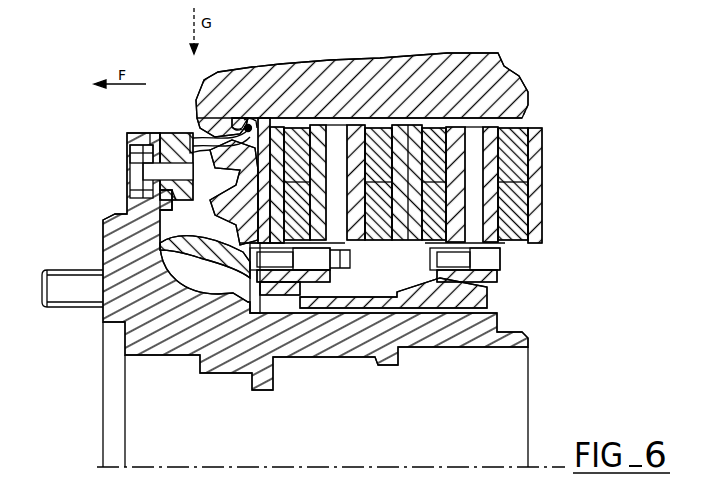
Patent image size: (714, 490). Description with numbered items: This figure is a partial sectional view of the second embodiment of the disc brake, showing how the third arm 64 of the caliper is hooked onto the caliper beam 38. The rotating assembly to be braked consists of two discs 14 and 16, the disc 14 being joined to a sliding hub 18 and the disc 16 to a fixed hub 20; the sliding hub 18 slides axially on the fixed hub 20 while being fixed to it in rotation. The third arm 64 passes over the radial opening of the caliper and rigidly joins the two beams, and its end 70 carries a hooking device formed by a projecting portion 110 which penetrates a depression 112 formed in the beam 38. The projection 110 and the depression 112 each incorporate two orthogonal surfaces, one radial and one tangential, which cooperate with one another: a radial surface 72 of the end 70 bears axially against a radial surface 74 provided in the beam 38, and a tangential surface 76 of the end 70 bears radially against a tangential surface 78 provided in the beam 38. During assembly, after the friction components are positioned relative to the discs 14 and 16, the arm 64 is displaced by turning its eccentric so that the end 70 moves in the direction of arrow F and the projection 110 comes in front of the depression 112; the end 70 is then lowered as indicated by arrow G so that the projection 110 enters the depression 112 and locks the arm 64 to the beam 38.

The disc 14 is at (473, 213).
The disc 16 is at (338, 215).
The sliding hub 18 is at (483, 298).
The fixed hub 20 is at (110, 233).
The beam 38 is at (163, 195).
The third arm 64 is at (372, 80).
The end of the arm 70 is at (215, 90).
The radial surface 72 is at (130, 165).
The radial surface 74 is at (133, 178).
The tangential surface 76 is at (233, 134).
The tangential surface 78 is at (250, 128).
The projecting portion 110 is at (233, 143).
The depression 112 is at (250, 126).